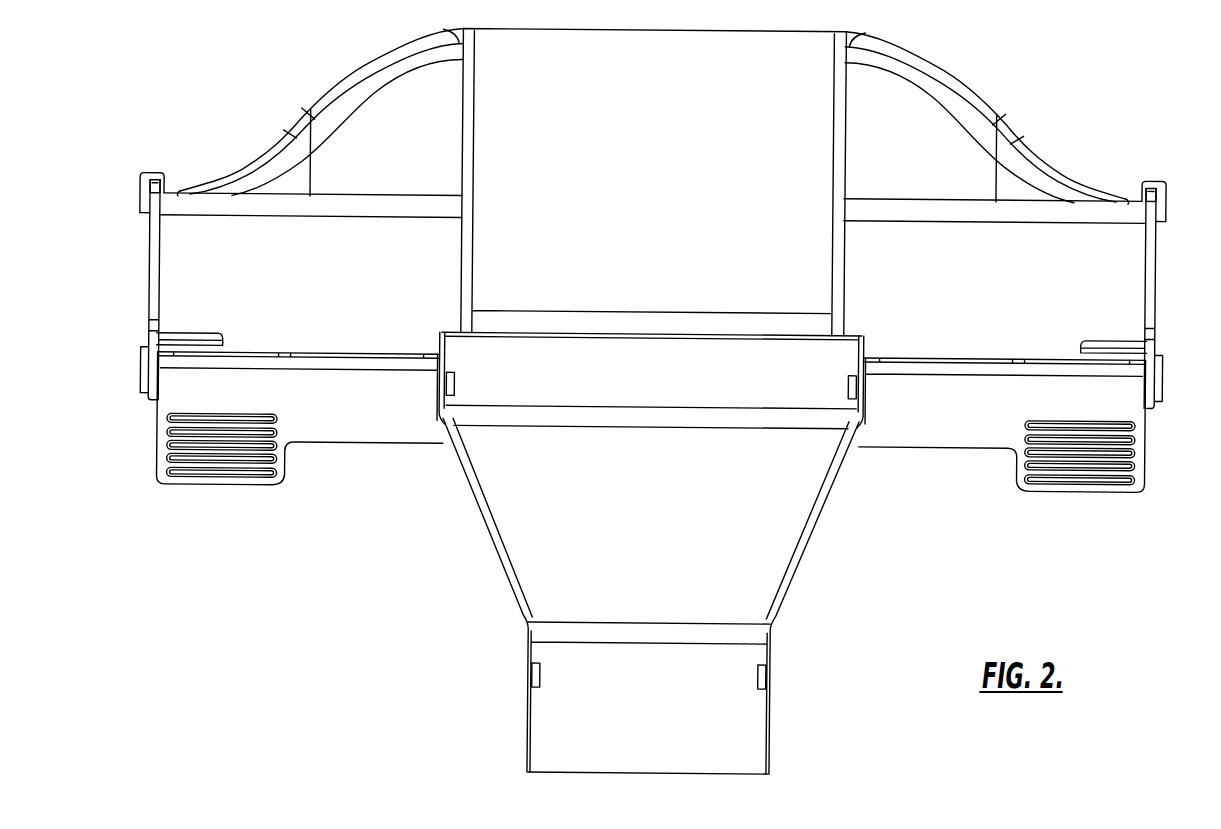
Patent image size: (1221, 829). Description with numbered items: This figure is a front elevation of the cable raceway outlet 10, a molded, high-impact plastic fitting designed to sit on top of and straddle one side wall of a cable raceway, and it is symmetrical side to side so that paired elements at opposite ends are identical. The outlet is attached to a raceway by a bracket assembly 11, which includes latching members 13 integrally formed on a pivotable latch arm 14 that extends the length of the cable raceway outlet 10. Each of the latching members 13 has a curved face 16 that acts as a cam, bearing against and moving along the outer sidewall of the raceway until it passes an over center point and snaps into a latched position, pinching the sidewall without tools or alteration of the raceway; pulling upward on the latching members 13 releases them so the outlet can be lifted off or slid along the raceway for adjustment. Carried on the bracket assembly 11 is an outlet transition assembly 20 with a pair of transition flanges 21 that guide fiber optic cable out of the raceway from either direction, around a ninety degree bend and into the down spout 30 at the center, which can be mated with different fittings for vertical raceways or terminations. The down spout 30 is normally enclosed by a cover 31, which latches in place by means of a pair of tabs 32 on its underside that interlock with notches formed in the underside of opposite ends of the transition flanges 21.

The cable raceway outlet 10 is at (226, 80).
The bracket assembly 11 is at (128, 197).
The latching members 13 is at (168, 478).
The pivotable latch arm 14 is at (938, 428).
The curved face 16 is at (1133, 372).
The outlet transition assembly 20 is at (1057, 83).
The transition flanges 21 is at (362, 103).
The down spout 30 is at (397, 513).
The cover 31 is at (651, 229).
The tabs 32 is at (165, 182).